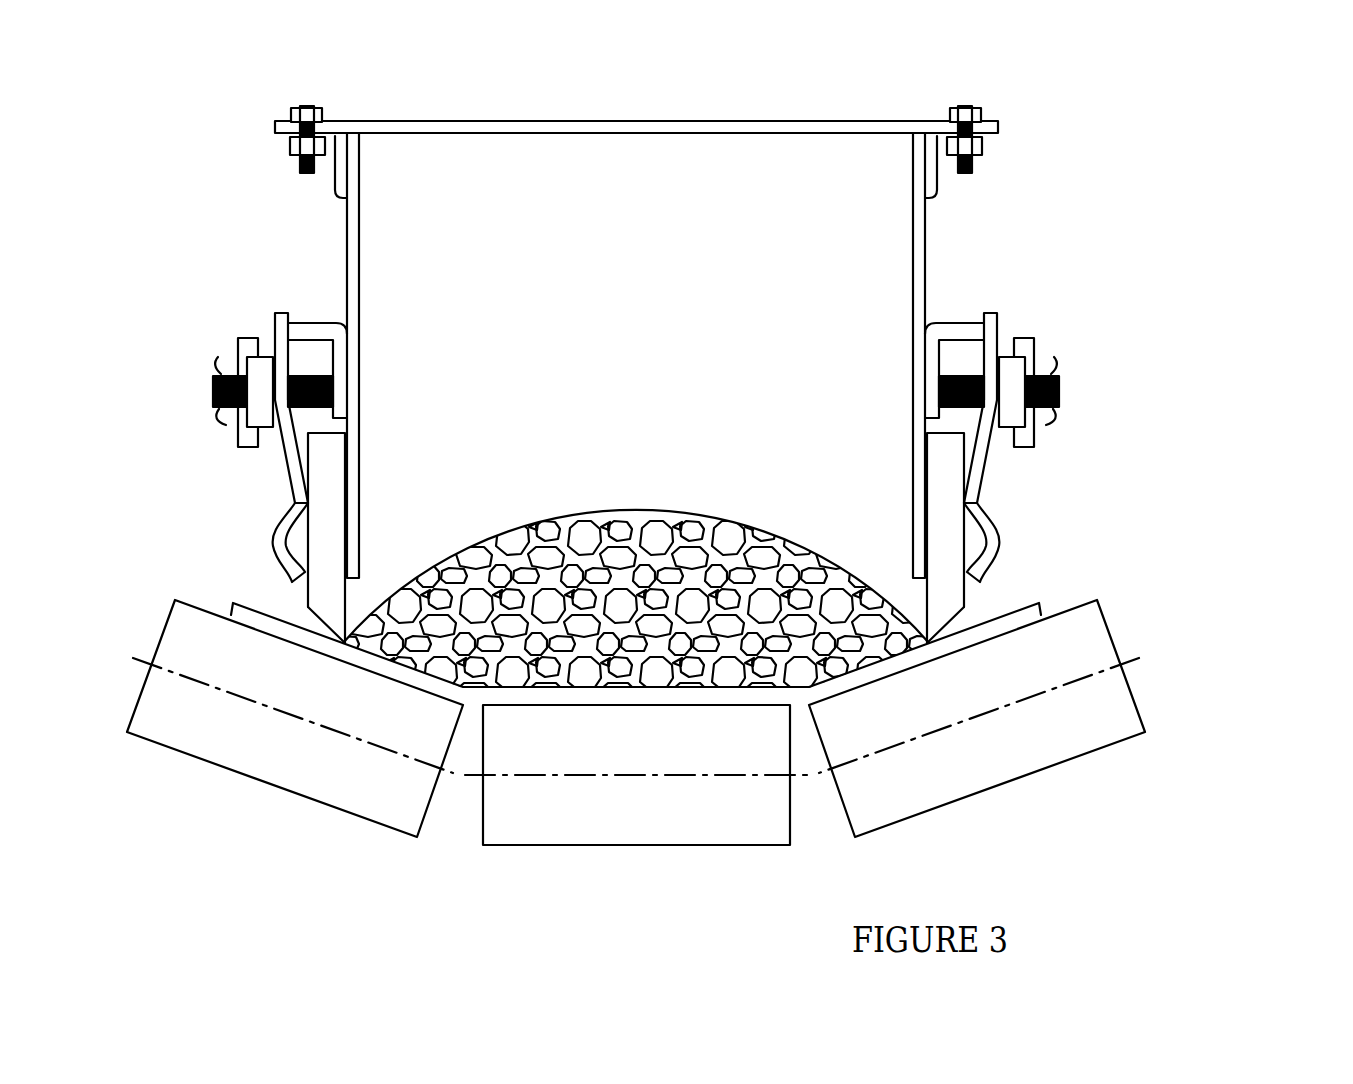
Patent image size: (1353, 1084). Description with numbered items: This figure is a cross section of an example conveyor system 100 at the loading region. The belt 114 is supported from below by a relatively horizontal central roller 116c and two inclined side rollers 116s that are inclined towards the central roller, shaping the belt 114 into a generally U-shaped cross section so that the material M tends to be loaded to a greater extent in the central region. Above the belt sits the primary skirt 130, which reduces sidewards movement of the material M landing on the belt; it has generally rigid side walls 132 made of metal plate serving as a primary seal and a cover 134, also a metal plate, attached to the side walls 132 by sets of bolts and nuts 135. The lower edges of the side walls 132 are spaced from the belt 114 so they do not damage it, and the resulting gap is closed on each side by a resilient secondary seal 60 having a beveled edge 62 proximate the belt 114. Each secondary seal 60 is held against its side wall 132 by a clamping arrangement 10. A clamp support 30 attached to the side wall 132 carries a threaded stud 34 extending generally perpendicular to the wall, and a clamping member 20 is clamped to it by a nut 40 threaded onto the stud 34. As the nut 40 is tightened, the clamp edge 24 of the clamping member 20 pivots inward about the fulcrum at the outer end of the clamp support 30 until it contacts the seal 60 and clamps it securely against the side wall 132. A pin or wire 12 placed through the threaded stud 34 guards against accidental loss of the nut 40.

The clamping arrangement 10 is at (638, 446).
The pin or wire 12 is at (222, 420).
The clamping member 20 is at (280, 473).
The clamp edge 24 is at (290, 575).
The clamp support 30 is at (316, 322).
The threaded stud 34 is at (215, 382).
The nut 40 is at (250, 330).
The secondary seal 60 is at (295, 602).
The beveled edge 62 is at (340, 627).
The conveyor system 100 is at (727, 744).
The belt 114 is at (1040, 612).
The central roller 116c is at (675, 845).
The side rollers 116s is at (263, 787).
The primary skirt 130 is at (982, 192).
The side walls 132 is at (362, 252).
The cover 134 is at (585, 121).
The bolts and nuts 135 is at (295, 158).
The material M is at (596, 512).